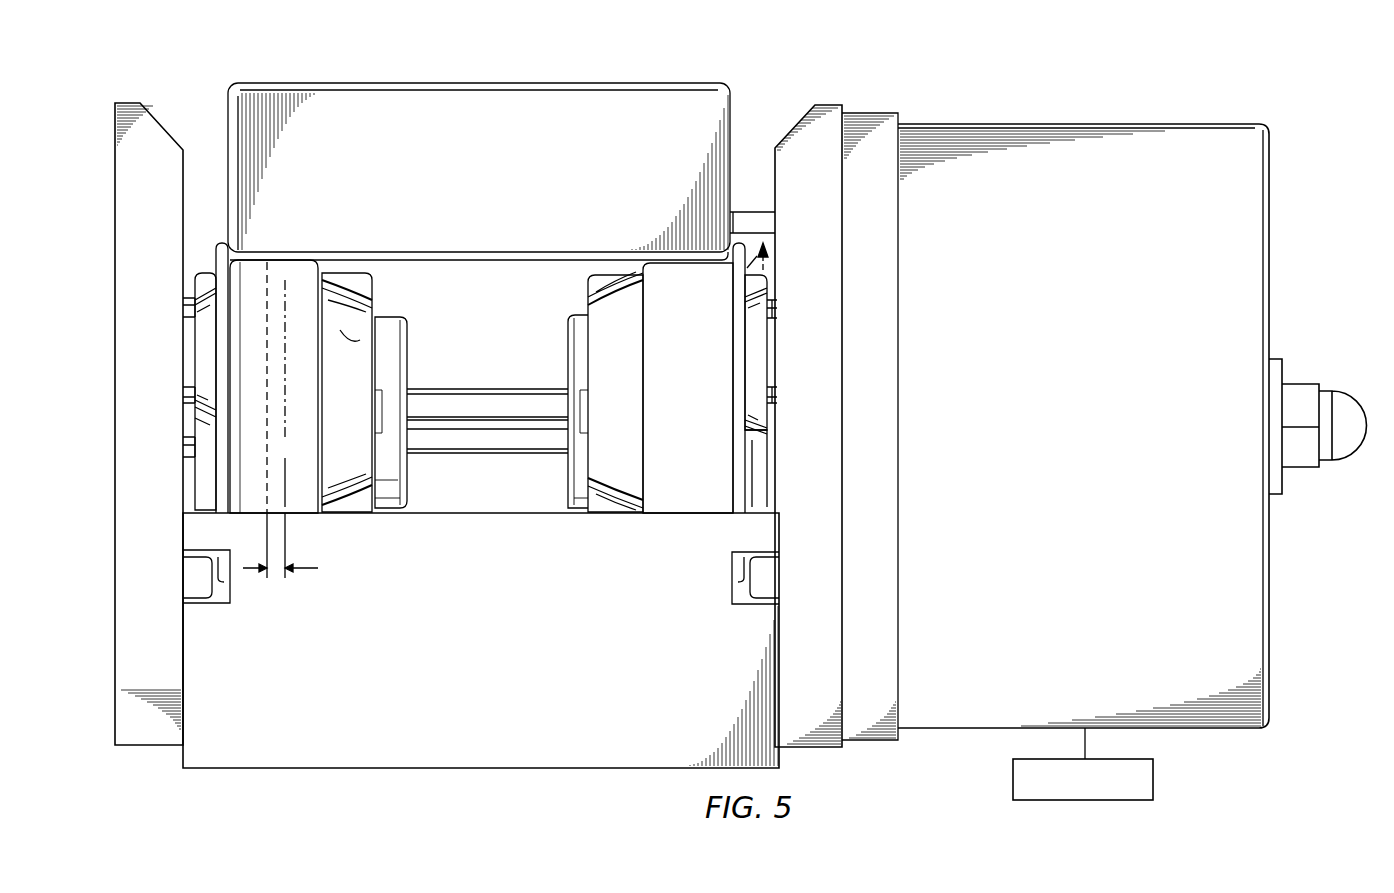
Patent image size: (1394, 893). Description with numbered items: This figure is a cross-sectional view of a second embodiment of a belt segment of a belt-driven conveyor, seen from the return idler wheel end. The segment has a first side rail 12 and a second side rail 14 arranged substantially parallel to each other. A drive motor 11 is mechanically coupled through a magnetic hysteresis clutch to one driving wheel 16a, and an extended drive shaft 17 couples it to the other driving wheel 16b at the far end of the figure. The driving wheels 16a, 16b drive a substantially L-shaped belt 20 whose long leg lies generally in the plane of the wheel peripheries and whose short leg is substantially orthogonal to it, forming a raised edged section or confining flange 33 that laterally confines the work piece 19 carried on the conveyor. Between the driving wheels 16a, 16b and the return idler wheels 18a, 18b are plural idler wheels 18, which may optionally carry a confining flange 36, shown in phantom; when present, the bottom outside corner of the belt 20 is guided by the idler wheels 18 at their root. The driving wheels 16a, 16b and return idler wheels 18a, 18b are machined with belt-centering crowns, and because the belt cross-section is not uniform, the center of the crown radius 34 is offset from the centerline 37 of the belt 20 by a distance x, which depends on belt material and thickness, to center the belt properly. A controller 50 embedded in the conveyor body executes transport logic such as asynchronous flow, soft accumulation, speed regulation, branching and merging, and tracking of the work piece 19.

The drive motor 11 is at (1082, 123).
The first side rail 12 is at (832, 104).
The second side rail 14 is at (126, 102).
The driving wheel 16a is at (568, 332).
The driving wheel 16b is at (410, 334).
The extended drive shaft 17 is at (487, 388).
The idler wheels 18 is at (205, 275).
The return idler wheel 18a is at (770, 428).
The return idler wheel 18b is at (360, 340).
The work piece 19 is at (493, 186).
The L-shaped belt 20 is at (683, 496).
The raised edged section 33 is at (738, 232).
The crown radius 34 is at (288, 296).
The confining flange 36 is at (768, 255).
The centerline 37 is at (262, 490).
The controller 50 is at (1153, 780).